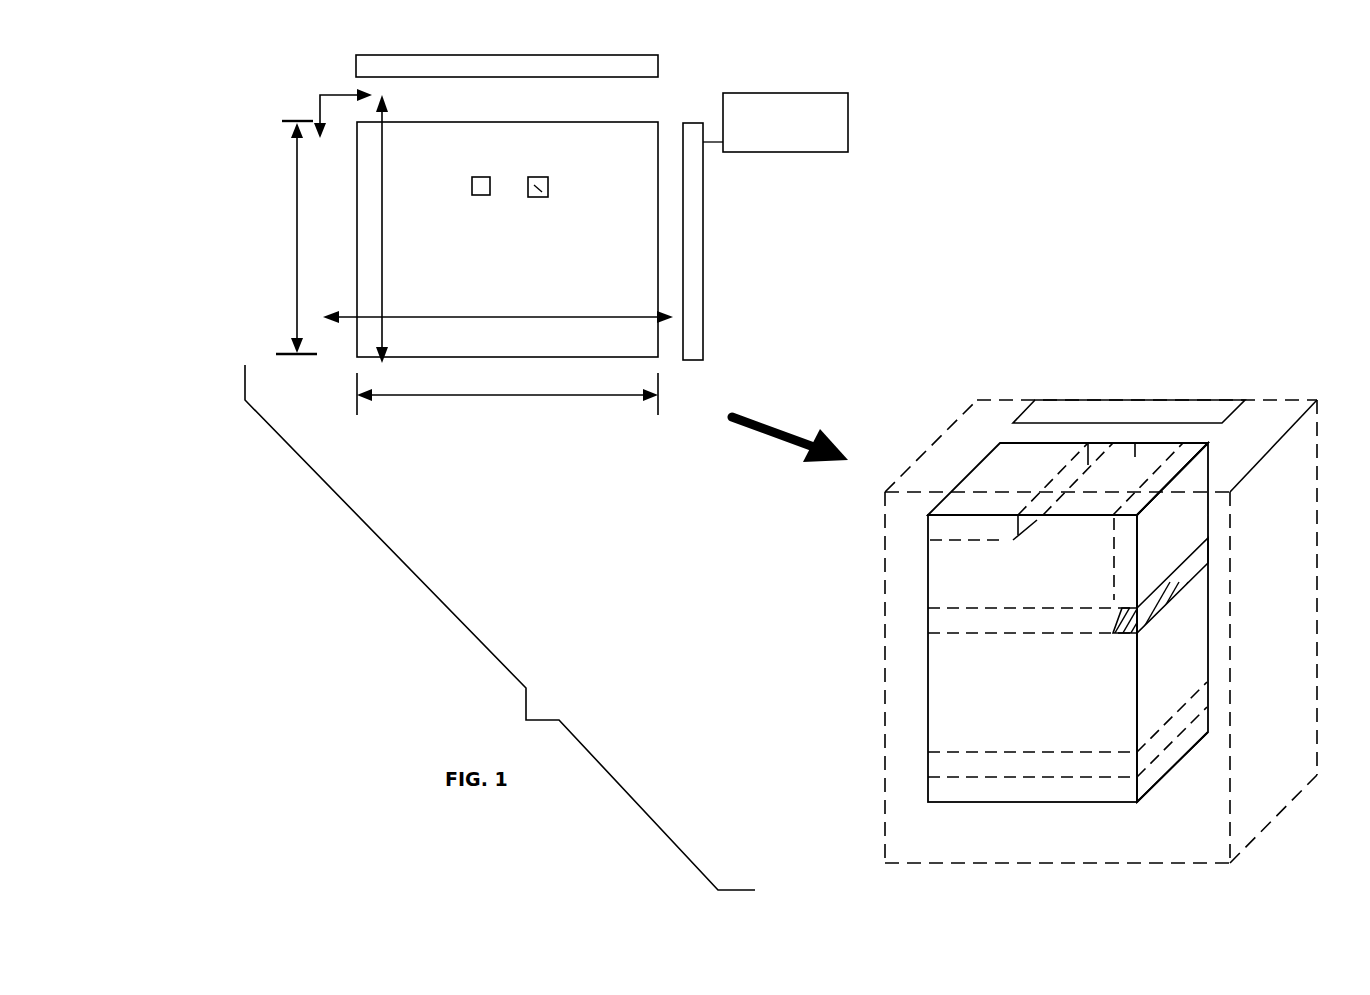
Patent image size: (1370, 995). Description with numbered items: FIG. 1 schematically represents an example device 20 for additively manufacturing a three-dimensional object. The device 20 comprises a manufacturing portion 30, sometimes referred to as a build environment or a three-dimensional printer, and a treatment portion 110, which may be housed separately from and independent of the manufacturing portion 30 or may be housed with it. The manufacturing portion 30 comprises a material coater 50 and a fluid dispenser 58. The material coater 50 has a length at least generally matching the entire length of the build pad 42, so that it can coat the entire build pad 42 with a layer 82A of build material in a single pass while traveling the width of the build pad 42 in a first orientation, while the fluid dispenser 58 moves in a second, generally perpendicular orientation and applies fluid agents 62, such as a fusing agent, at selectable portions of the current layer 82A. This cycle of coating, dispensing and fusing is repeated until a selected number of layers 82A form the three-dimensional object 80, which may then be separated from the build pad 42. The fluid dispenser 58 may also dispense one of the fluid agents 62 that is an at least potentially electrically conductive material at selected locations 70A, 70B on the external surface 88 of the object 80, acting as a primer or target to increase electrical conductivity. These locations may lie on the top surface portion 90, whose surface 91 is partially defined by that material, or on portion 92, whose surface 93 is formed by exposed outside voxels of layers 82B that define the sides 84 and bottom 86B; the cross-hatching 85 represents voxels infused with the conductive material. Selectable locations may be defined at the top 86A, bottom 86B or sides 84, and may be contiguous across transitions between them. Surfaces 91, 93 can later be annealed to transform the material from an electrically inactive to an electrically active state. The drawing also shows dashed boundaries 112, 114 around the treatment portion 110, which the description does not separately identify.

The device 20 is at (452, 506).
The manufacturing portion 30 is at (792, 233).
The build pad 42 is at (417, 299).
The material coater 50 is at (658, 68).
The fluid dispenser 58 is at (678, 126).
The fluid agents 62 is at (783, 93).
The selected location 70A is at (490, 192).
The selected location 70B is at (546, 193).
The 3D object 80 is at (935, 563).
The layer of build material 82A is at (1063, 767).
The layer 82B is at (940, 622).
The sides 84 is at (1091, 720).
The cross-hatching 85 is at (1168, 590).
The top 86A is at (1137, 455).
The bottom 86B is at (1163, 772).
The external surface 88 is at (934, 706).
The portion 90 is at (1014, 455).
The surface 91 is at (974, 479).
The portion 92 is at (1103, 548).
The surface 93 is at (1157, 533).
The treatment portion 110 is at (1146, 390).
The treatment volume 112 is at (930, 442).
The treatment volume side 114 is at (1281, 521).